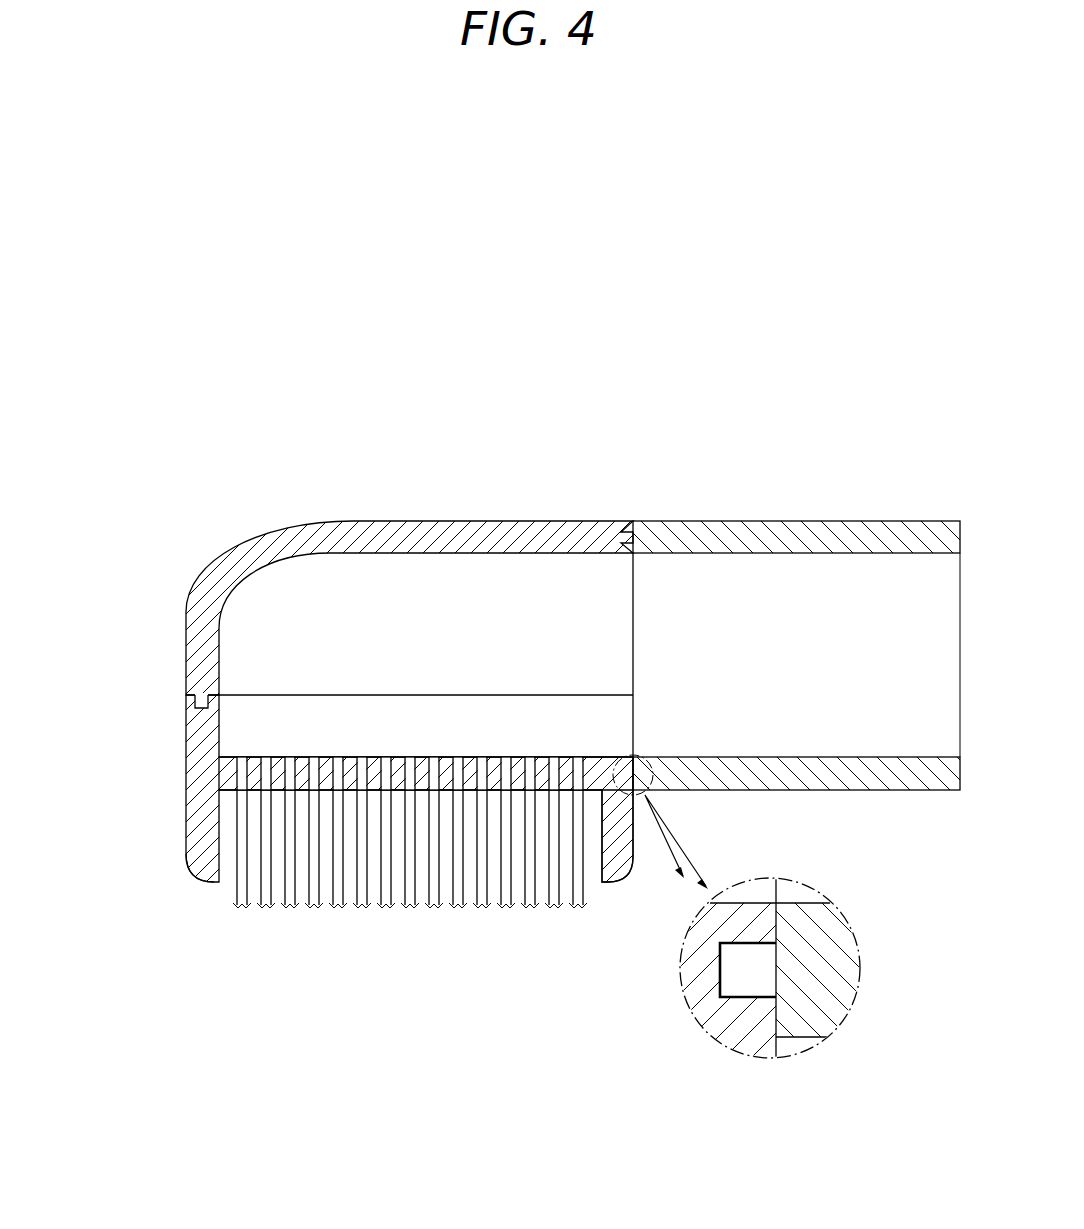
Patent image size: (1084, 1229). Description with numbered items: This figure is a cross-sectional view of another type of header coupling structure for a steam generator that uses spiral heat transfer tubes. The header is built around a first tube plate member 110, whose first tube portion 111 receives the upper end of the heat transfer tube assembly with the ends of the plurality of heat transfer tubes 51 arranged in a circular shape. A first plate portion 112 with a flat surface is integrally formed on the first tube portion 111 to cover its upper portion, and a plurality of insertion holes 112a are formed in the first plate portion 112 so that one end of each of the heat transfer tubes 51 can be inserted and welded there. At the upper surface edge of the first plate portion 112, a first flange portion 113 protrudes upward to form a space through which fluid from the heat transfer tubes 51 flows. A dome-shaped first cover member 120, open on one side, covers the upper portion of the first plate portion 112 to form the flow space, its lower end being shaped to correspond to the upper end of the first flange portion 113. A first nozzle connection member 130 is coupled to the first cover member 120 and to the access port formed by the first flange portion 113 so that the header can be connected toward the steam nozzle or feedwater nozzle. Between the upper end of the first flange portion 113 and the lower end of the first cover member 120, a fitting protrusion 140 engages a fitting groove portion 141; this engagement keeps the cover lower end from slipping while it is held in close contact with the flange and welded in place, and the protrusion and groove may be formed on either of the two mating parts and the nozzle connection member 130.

The first tube plate member 110 is at (178, 837).
The first tube portion 111 is at (208, 880).
The first plate portion 112 is at (604, 835).
The insertion holes 112a is at (241, 773).
The first flange portion 113 is at (192, 694).
The first cover member 120 is at (443, 521).
The first nozzle connection member 130 is at (770, 521).
The fitting protrusion 140 is at (745, 973).
The fitting groove portion 141 is at (733, 977).
The heat transfer tubes 51 is at (246, 853).